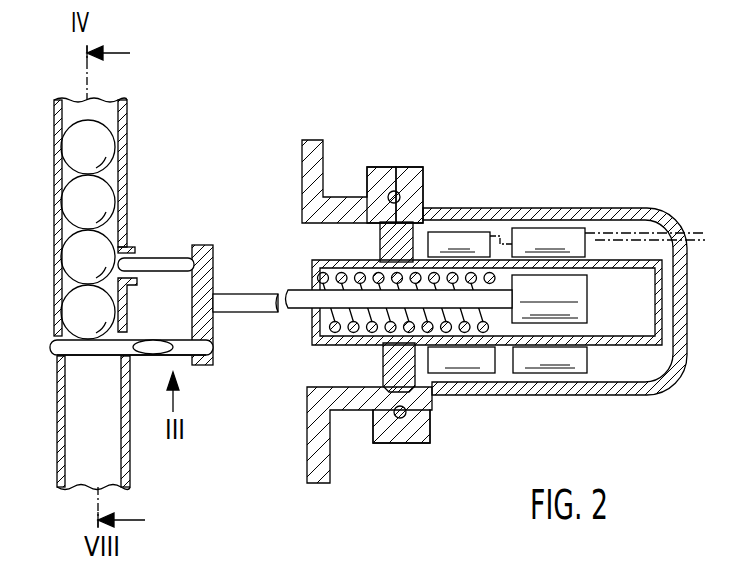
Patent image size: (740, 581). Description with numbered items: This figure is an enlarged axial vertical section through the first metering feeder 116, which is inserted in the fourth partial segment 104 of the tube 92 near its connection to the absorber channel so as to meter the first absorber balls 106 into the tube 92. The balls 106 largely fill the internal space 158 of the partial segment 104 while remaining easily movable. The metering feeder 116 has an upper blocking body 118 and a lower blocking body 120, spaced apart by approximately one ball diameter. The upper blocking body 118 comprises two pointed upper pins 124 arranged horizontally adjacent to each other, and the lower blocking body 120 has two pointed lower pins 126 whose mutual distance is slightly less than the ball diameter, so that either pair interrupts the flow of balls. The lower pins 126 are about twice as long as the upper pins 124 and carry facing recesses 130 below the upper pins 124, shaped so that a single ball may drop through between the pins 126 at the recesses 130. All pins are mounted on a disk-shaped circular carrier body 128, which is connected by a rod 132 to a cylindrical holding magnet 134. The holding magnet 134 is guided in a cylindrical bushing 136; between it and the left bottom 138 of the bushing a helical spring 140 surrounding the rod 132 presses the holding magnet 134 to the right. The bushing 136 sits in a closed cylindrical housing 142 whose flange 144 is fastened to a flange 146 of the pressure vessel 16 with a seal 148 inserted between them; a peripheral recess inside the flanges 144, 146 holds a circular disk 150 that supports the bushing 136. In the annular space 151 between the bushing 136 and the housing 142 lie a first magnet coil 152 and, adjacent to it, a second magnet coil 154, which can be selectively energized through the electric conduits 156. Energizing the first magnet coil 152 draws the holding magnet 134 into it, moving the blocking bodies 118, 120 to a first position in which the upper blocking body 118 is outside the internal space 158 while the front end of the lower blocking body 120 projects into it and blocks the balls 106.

The pressure vessel 16 is at (303, 156).
The tube 92 is at (50, 204).
The fourth partial segment 104 is at (126, 116).
The first absorber balls 106 is at (102, 193).
The first metering feeder 116 is at (225, 183).
The upper blocking body 118 is at (154, 246).
The lower blocking body 120 is at (154, 327).
The upper pins 124 is at (174, 257).
The lower pins 126 is at (177, 357).
The carrier body 128 is at (214, 280).
The recesses 130 is at (160, 357).
The rod 132 is at (262, 314).
The holding magnet 134 is at (565, 283).
The bushing 136 is at (620, 335).
The left bottom of the bushing 138 is at (313, 272).
The helical spring 140 is at (470, 333).
The housing 142 is at (560, 209).
The flange 144 is at (421, 167).
The flange 146 is at (383, 167).
The seal 148 is at (400, 420).
The circular disk 150 is at (383, 372).
The annular space 151 is at (616, 365).
The first magnet coil 152 is at (540, 240).
The second magnet coil 154 is at (455, 243).
The electric conduits 156 is at (688, 236).
The internal space 158 is at (106, 426).